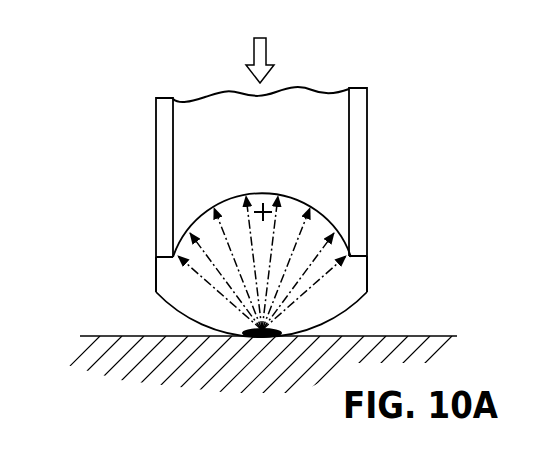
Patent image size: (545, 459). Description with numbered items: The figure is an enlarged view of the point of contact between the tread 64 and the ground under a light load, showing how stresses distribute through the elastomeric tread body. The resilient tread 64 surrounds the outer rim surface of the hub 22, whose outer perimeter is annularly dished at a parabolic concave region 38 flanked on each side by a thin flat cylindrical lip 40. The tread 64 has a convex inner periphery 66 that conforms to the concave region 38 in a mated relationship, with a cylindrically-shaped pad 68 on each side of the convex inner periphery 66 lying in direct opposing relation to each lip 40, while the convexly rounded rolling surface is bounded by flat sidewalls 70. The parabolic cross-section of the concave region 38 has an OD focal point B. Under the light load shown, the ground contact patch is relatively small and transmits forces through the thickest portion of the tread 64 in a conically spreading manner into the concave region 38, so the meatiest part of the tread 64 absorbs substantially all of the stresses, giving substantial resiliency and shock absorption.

The hub 22 is at (326, 80).
The cylindrical lips 40 is at (162, 130).
The concave region 38 is at (273, 139).
The convex inner periphery 66 is at (320, 212).
The cylindrically-shaped pads 68 is at (172, 256).
The flat sidewalls 70 is at (156, 266).
The tread 64 is at (181, 314).
The OD focal point B is at (271, 198).